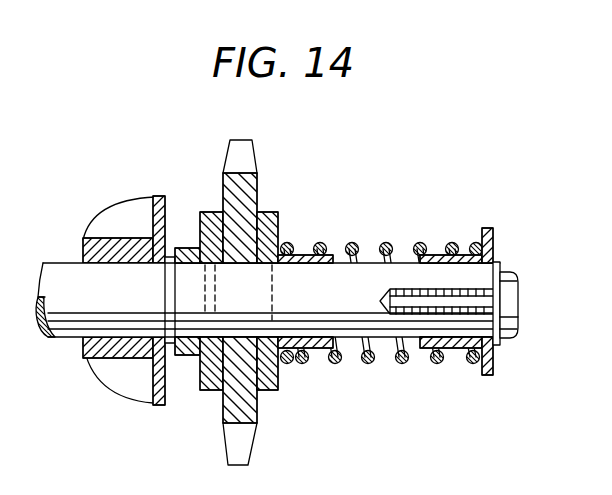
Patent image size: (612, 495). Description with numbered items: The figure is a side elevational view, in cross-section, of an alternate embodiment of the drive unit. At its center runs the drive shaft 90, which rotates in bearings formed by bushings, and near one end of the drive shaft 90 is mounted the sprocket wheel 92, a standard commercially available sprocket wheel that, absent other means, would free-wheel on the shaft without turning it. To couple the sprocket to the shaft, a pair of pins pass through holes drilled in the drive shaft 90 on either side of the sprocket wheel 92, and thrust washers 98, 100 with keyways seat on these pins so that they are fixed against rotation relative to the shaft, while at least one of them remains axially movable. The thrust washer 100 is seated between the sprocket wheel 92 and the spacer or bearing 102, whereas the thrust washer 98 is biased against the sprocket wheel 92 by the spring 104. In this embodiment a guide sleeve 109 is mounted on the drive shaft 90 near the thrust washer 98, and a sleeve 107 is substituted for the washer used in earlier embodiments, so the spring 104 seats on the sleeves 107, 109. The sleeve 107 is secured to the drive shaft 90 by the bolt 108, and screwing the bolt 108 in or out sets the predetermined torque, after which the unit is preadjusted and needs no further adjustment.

The drive shaft 90 is at (341, 303).
The sprocket wheel 92 is at (243, 193).
The thrust washer 98 is at (268, 220).
The thrust washer 100 is at (213, 212).
The spacer or bearing 102 is at (187, 355).
The spring 104 is at (355, 242).
The sleeve 107 is at (453, 352).
The bolt 108 is at (510, 298).
The guide sleeve 109 is at (310, 353).